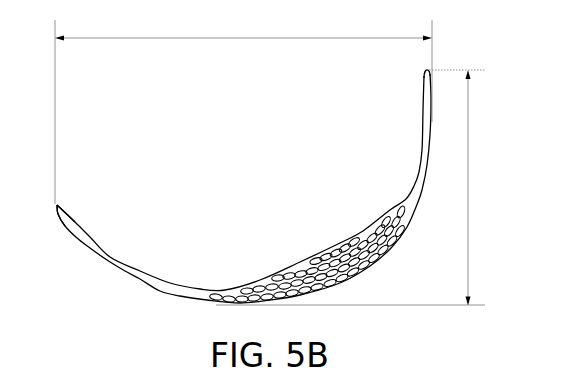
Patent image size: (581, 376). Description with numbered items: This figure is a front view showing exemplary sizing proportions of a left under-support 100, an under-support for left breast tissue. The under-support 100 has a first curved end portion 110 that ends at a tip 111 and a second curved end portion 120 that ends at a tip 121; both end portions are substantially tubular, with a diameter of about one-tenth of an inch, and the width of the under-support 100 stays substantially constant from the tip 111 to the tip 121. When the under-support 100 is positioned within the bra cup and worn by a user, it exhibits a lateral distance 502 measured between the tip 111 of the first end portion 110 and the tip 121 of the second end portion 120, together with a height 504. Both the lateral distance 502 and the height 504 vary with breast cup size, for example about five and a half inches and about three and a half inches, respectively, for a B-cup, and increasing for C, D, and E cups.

The under-support 100 is at (266, 191).
The first curved end portion 110 is at (118, 258).
The tip of the first end portion 111 is at (66, 204).
The second curved end portion 120 is at (430, 132).
The tip of the second end portion 121 is at (418, 70).
The lateral distance 502 is at (243, 112).
The height 504 is at (368, 188).